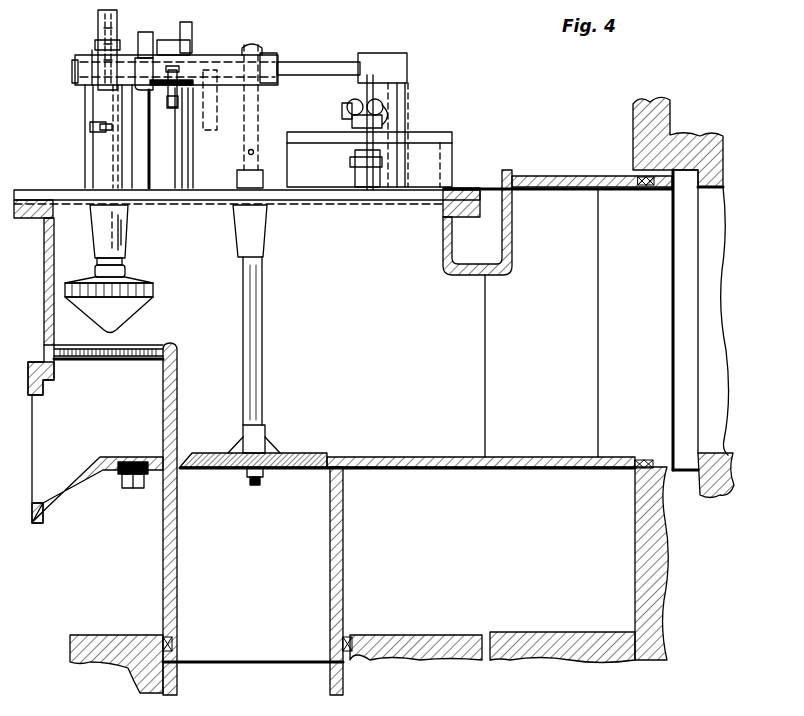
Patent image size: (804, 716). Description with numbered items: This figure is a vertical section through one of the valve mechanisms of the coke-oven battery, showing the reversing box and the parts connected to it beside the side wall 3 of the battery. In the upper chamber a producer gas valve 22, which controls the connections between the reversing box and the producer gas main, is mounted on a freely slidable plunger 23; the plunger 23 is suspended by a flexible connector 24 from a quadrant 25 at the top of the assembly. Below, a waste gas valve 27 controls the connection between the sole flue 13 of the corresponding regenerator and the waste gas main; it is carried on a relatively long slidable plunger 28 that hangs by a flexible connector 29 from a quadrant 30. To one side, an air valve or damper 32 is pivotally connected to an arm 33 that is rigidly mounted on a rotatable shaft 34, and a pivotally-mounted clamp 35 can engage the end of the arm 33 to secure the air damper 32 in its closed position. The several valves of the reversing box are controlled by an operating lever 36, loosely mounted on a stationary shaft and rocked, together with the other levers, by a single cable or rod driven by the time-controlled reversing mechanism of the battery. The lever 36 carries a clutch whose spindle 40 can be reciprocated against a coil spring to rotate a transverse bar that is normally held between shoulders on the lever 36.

The quadrant 25 is at (100, 23).
The flexible connector 24 is at (100, 50).
The spindle 40 is at (172, 90).
The operating lever 36 is at (192, 30).
The quadrant 30 is at (262, 50).
The rotatable shaft 34 is at (322, 68).
The arm 33 is at (366, 88).
The pivotally-mounted clamp 35 is at (362, 134).
The air valve or damper 32 is at (430, 140).
The flexible connector 29 is at (248, 152).
The slidable plunger 23 is at (108, 222).
The producer gas valve 22 is at (148, 302).
The slidable plunger 28 is at (252, 320).
The waste gas valve 27 is at (282, 460).
The sole flue 13 is at (716, 387).
The side wall 3 is at (700, 488).